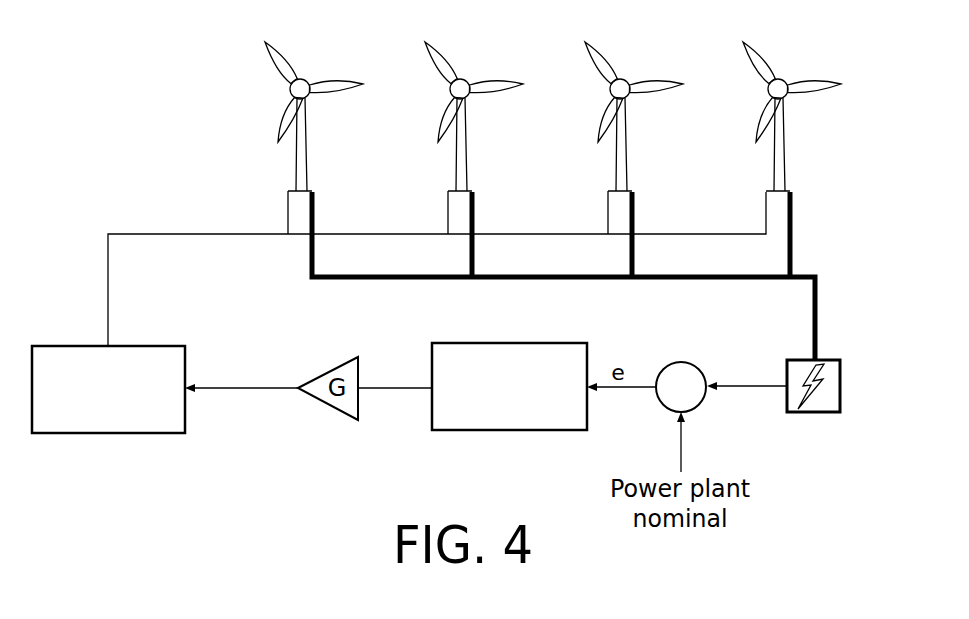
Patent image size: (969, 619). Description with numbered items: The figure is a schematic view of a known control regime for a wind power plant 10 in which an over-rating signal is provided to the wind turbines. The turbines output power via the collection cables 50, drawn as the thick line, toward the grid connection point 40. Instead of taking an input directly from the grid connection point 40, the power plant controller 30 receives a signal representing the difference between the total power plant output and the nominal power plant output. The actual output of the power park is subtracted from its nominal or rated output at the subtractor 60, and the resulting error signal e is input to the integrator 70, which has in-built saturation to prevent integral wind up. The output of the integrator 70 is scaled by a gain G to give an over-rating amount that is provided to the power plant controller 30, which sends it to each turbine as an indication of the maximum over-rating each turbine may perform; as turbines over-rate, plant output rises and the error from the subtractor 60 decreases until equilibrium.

The wind power plant 10 is at (116, 86).
The power plant controller 30 is at (53, 434).
The grid connection point 40 is at (812, 413).
The collection cables 50 is at (818, 292).
The subtractor 60 is at (677, 362).
The integrator 70 is at (455, 431).